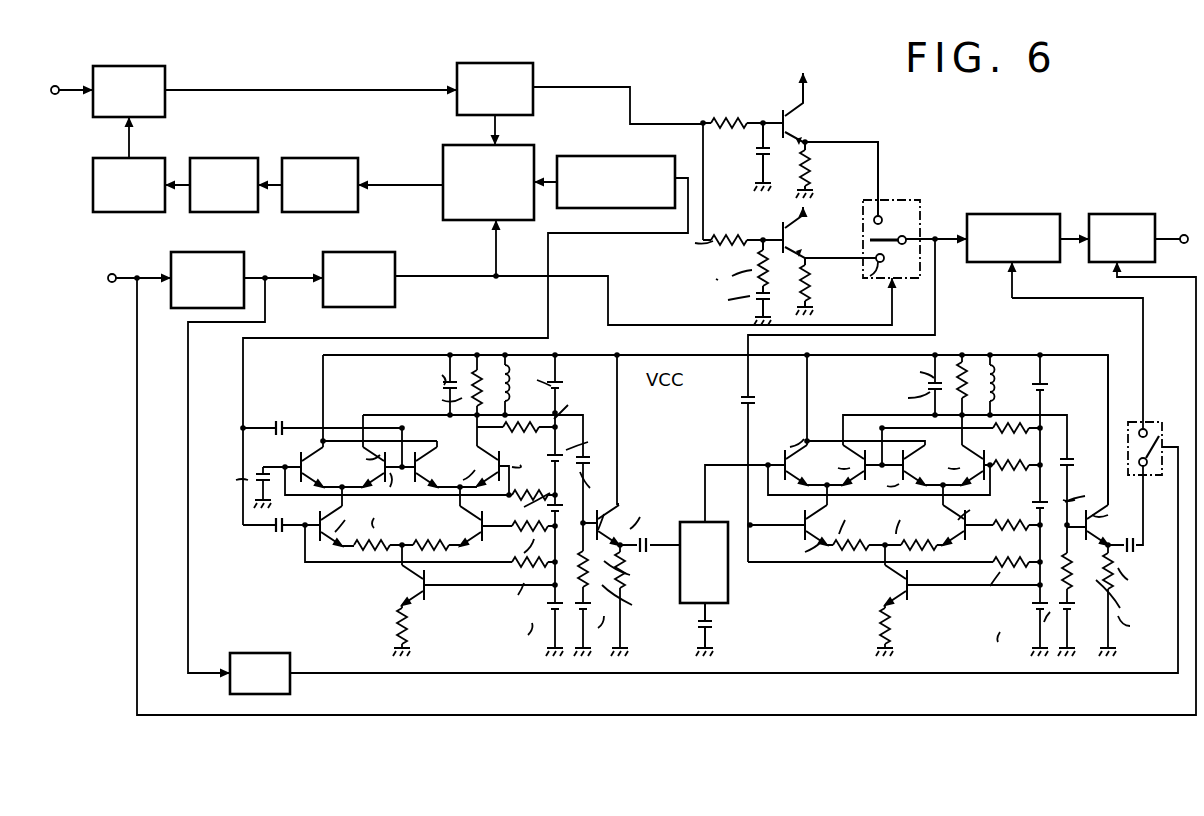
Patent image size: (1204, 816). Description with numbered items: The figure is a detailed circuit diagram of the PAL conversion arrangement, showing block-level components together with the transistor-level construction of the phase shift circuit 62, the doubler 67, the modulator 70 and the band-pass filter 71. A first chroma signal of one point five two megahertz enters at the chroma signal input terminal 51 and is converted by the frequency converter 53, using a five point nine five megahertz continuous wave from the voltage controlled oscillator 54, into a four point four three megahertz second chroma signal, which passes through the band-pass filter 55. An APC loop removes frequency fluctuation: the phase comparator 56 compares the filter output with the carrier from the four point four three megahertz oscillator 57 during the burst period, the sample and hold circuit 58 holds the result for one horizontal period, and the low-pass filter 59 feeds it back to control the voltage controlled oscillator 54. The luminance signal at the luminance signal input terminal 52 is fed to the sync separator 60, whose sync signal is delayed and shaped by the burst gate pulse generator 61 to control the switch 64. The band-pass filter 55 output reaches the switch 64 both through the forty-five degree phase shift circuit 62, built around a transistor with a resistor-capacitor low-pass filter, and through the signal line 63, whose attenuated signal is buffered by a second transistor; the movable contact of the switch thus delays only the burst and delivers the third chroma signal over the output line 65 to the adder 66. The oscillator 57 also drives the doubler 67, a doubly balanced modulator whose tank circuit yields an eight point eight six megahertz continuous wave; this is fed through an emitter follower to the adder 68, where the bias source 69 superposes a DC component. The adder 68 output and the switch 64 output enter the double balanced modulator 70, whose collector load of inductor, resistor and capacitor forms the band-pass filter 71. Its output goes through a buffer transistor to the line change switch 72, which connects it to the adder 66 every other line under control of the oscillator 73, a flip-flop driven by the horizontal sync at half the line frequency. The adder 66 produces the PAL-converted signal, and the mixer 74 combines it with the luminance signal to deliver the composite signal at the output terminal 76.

The chroma signal input terminal 51 is at (53, 96).
The luminance signal input terminal 52 is at (109, 272).
The frequency converter 53 is at (126, 66).
The voltage controlled oscillator 54 is at (147, 158).
The band-pass filter 55 is at (490, 63).
The phase comparator 56 is at (456, 148).
The 4.43 MHz oscillator 57 is at (590, 156).
The sample and hold circuit 58 is at (330, 158).
The low-pass filter 59 is at (238, 158).
The sync separator 60 is at (246, 258).
The burst gate pulse generator 61 is at (397, 258).
The 45° phase shift circuit 62 is at (761, 110).
The signal line 63 is at (706, 203).
The switch 64 is at (905, 200).
The output line 65 is at (938, 312).
The adder 66 is at (1010, 214).
The doubler 67 is at (344, 598).
The adder 68 is at (728, 576).
The bias source 69 is at (700, 626).
The modulator 70 is at (954, 485).
The band-pass filter 71 is at (962, 368).
The line change switch 72 is at (1140, 420).
The oscillator 73 is at (246, 653).
The mixer 74 is at (1120, 214).
The output terminal 76 is at (1184, 235).